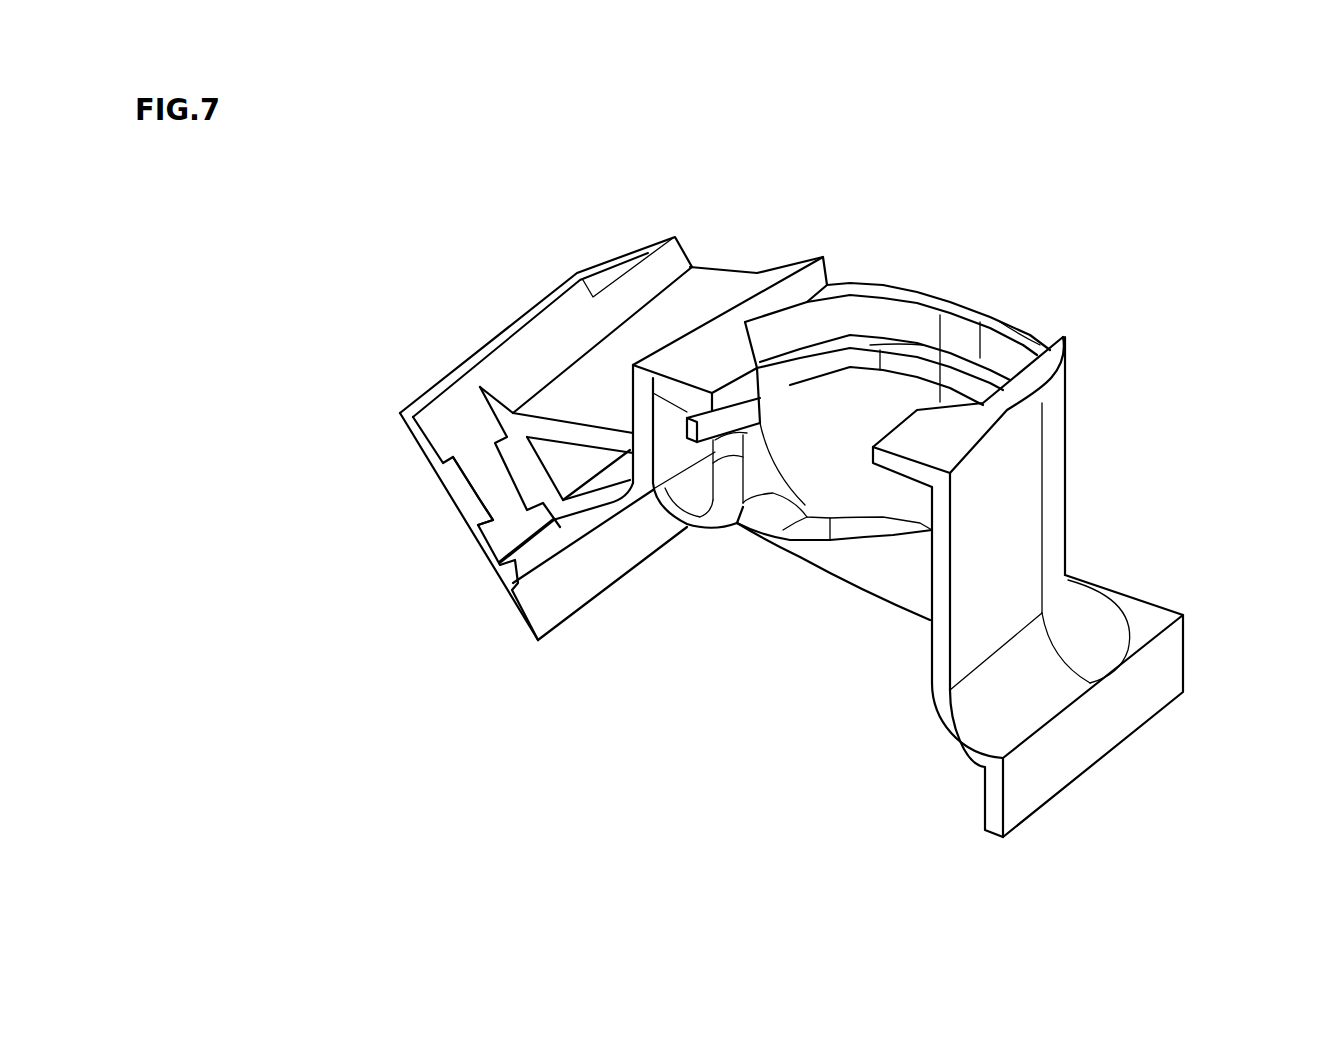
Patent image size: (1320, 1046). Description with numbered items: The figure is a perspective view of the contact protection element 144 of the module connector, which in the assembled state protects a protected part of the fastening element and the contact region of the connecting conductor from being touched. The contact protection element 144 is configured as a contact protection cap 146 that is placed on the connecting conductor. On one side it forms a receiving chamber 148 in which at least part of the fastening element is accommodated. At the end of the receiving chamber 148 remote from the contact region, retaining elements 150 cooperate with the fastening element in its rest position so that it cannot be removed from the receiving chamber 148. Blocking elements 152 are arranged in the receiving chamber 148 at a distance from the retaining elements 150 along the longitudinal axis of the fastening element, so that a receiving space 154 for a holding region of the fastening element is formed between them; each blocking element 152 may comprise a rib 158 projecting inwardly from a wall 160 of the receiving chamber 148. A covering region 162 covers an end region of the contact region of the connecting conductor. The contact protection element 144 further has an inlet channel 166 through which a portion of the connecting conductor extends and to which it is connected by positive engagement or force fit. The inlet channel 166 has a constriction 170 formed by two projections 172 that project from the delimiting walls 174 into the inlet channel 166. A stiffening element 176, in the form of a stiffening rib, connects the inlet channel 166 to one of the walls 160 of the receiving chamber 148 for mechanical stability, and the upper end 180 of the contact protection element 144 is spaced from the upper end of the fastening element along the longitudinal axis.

The contact protection element 144 is at (1071, 587).
The contact protection cap 146 is at (1071, 587).
The receiving chamber 148 is at (840, 405).
The retaining element 150 is at (737, 355).
The blocking element 152 is at (793, 367).
The receiving space 154 is at (1012, 348).
The rib 158 is at (923, 377).
The wall 160 is at (1000, 555).
The covering region 162 is at (1080, 753).
The inlet channel 166 is at (445, 543).
The constriction 170 is at (465, 506).
The projections 172 is at (480, 500).
The delimiting walls 174 is at (500, 413).
The stiffening element 176 is at (697, 292).
The upper end 180 is at (917, 446).